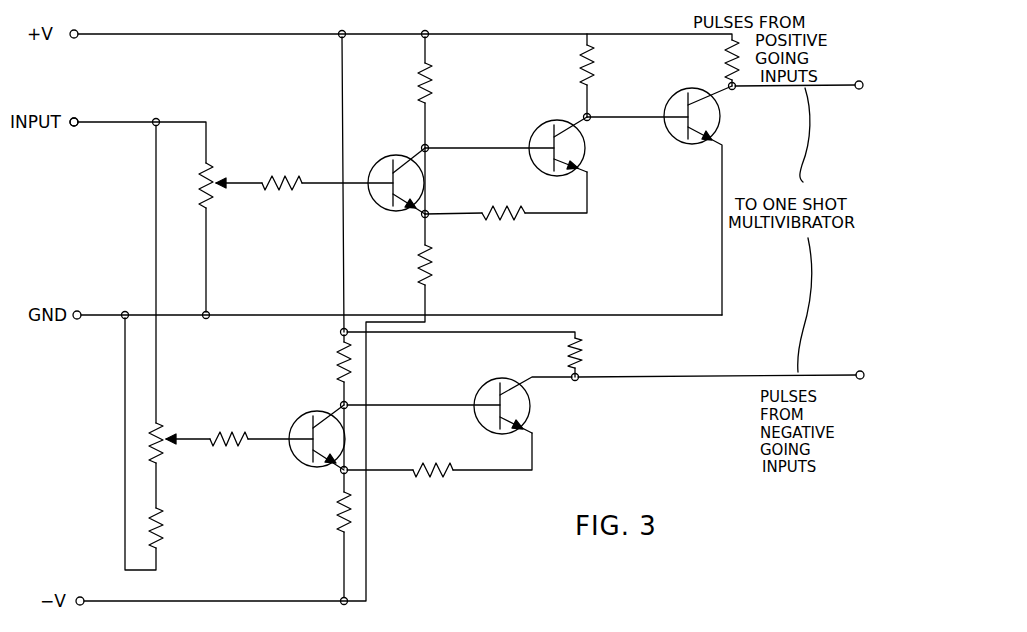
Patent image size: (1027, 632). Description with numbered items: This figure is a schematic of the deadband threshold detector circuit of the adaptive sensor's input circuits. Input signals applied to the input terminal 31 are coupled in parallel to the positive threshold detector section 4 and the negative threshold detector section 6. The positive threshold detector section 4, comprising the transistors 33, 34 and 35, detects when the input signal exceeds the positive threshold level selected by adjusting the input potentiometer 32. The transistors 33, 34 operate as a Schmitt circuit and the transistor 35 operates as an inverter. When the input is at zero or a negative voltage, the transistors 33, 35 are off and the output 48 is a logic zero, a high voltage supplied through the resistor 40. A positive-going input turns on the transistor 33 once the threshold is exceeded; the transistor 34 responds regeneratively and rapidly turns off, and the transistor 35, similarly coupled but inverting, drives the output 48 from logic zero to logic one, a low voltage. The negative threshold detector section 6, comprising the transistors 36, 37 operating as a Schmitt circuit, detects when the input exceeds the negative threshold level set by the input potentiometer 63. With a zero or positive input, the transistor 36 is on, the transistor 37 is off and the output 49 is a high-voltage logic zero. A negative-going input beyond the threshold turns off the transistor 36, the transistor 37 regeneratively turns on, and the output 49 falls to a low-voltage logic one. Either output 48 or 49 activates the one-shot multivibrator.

The input terminal 31 is at (76, 118).
The input potentiometer 32 is at (219, 170).
The transistor 33 is at (392, 150).
The transistor 34 is at (535, 130).
The transistor 35 is at (667, 106).
The positive threshold detector section 4 is at (500, 188).
The resistor 40 is at (726, 62).
The output 48 is at (861, 80).
The output 49 is at (864, 371).
The transistor 36 is at (314, 412).
The transistor 37 is at (485, 386).
The negative threshold detector section 6 is at (440, 444).
The input potentiometer 63 is at (172, 423).